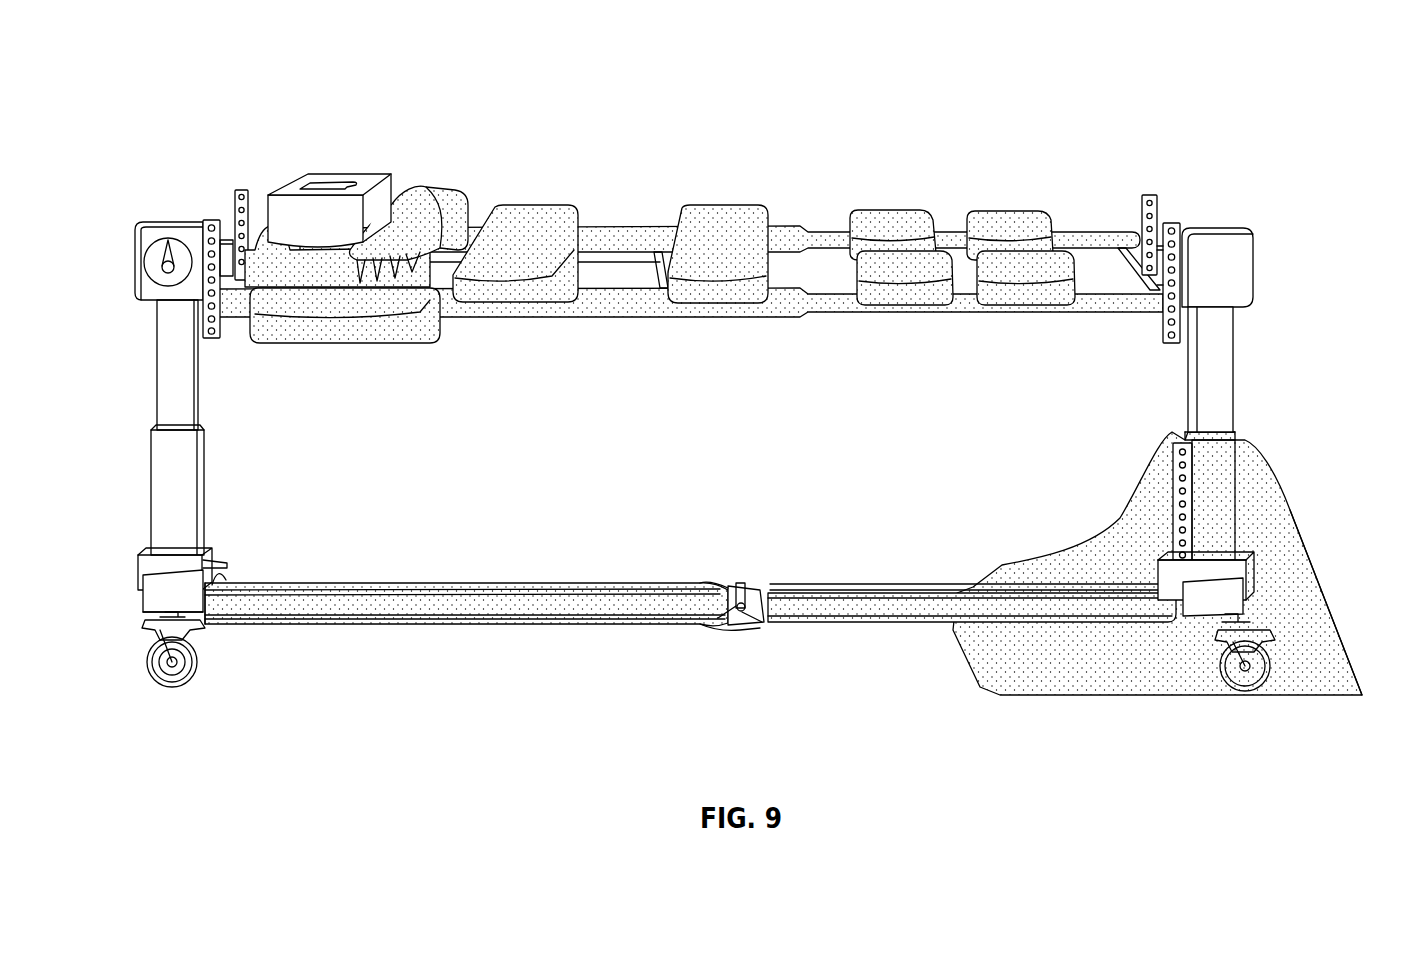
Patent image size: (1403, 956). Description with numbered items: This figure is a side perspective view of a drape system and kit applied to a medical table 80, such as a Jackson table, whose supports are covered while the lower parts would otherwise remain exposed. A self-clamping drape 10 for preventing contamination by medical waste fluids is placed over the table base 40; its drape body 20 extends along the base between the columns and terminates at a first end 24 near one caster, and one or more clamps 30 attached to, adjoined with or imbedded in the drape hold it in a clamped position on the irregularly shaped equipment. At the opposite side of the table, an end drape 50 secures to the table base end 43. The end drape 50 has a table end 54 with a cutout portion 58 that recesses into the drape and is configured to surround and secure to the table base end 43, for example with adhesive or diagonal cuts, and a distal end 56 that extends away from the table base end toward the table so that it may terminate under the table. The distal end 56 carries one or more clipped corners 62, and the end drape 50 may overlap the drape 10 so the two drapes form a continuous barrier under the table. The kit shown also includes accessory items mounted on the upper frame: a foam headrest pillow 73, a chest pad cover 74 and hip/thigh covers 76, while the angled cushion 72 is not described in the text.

The self-clamping drape 10 is at (802, 685).
The drape body 20 is at (482, 604).
The first end 24 is at (163, 650).
The clamp 30 is at (234, 605).
The base 40 is at (202, 612).
The table base end 43 is at (1217, 368).
The end drape 50 is at (1118, 722).
The table end 54 is at (1302, 560).
The distal end 56 is at (950, 620).
The cutout portion 58 is at (1230, 560).
The clipped corner 62 is at (978, 590).
The angled head cushion 72 is at (418, 200).
The foam headrest pillow 73 is at (290, 203).
The chest pad cover 74 is at (495, 215).
The hip/thigh cover 76 is at (898, 218).
The table 80 is at (1241, 198).